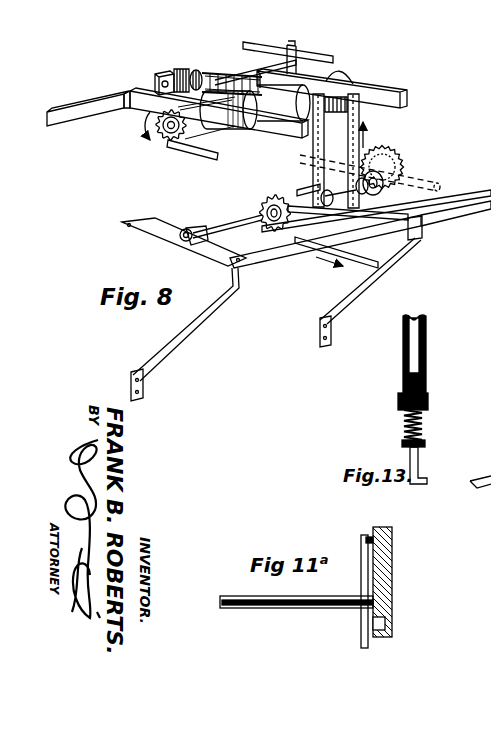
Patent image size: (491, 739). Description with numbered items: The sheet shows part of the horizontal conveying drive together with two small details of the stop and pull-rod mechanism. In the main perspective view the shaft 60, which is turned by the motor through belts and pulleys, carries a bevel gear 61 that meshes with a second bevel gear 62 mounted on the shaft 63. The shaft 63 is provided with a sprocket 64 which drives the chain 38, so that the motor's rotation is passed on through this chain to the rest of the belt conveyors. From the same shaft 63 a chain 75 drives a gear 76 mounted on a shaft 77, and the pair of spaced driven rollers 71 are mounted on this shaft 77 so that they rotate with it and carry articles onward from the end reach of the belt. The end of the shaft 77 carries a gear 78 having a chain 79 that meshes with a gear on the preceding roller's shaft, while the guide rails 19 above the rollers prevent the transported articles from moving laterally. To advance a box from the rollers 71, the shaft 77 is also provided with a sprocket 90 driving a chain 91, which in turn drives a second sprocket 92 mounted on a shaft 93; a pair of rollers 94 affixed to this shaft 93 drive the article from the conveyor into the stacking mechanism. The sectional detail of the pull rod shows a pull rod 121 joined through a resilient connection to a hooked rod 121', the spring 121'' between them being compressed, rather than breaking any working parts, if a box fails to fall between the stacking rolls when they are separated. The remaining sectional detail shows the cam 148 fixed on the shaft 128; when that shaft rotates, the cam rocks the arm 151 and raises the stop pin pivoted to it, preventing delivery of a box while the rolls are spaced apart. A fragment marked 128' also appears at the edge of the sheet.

In FIG. 8, the guide rails 19 is at (304, 56).
In FIG. 8, the chain 38 is at (365, 260).
In FIG. 8, the shaft 60 is at (432, 184).
In FIG. 8, the bevel gear 61 is at (392, 160).
In FIG. 8, the second bevel gear 62 is at (400, 179).
In FIG. 8, the shaft 63 is at (232, 224).
In FIG. 8, the sprocket 64 is at (266, 202).
In FIG. 8, the driven rollers 71 is at (247, 96).
In FIG. 8, the chain 75 is at (362, 136).
In FIG. 8, the gear 76 is at (350, 78).
In FIG. 8, the shaft 77 is at (320, 93).
In FIG. 8, the gear 78 is at (164, 144).
In FIG. 8, the chain 79 is at (211, 158).
In FIG. 8, the sprocket 90 is at (268, 118).
In FIG. 8, the chain 91 is at (215, 80).
In FIG. 8, the second sprocket 92 is at (182, 69).
In FIG. 8, the shaft 93 is at (165, 72).
In FIG. 8, the rollers 94 is at (197, 71).
In FIG. 13, the pull rod 121 is at (430, 362).
In FIG. 13, the spring 121'' is at (431, 428).
In FIG. 13, the hooked rod 121' is at (433, 465).
In FIG. 11A, the shaft 128 is at (296, 592).
In FIG. 13, the bar 128' is at (478, 459).
In FIG. 11A, the cam 148 is at (392, 617).
In FIG. 11A, the arm 151 is at (362, 608).